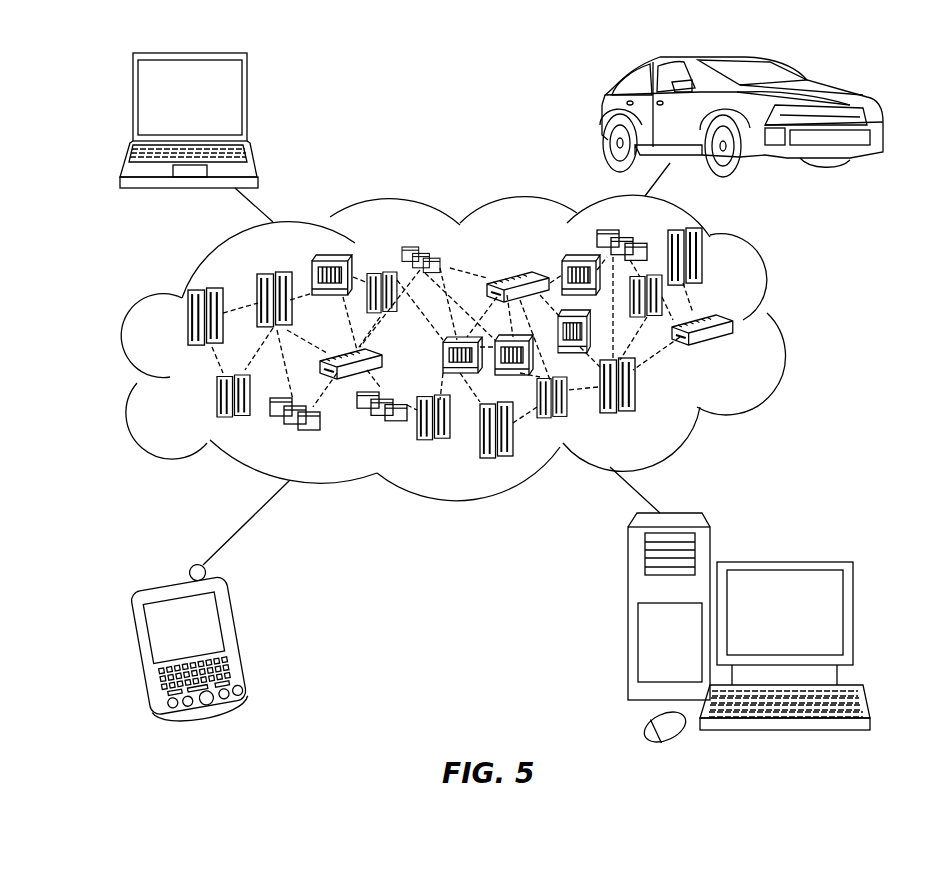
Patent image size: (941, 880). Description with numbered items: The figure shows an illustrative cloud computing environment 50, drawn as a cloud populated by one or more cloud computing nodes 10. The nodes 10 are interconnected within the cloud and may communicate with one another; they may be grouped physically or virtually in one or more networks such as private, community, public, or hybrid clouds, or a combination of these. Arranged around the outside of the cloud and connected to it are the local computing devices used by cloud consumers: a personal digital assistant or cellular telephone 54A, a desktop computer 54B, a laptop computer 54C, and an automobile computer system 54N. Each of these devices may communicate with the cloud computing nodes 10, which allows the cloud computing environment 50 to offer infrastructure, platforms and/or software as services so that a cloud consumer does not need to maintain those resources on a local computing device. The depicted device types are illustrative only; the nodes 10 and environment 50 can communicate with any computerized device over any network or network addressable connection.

The cloud computing node 10 is at (735, 352).
The cloud computing environment 50 is at (783, 325).
The personal digital assistant or cellular telephone 54A is at (238, 638).
The desktop computer 54B is at (782, 562).
The laptop computer 54C is at (247, 104).
The automobile computer system 54N is at (605, 120).